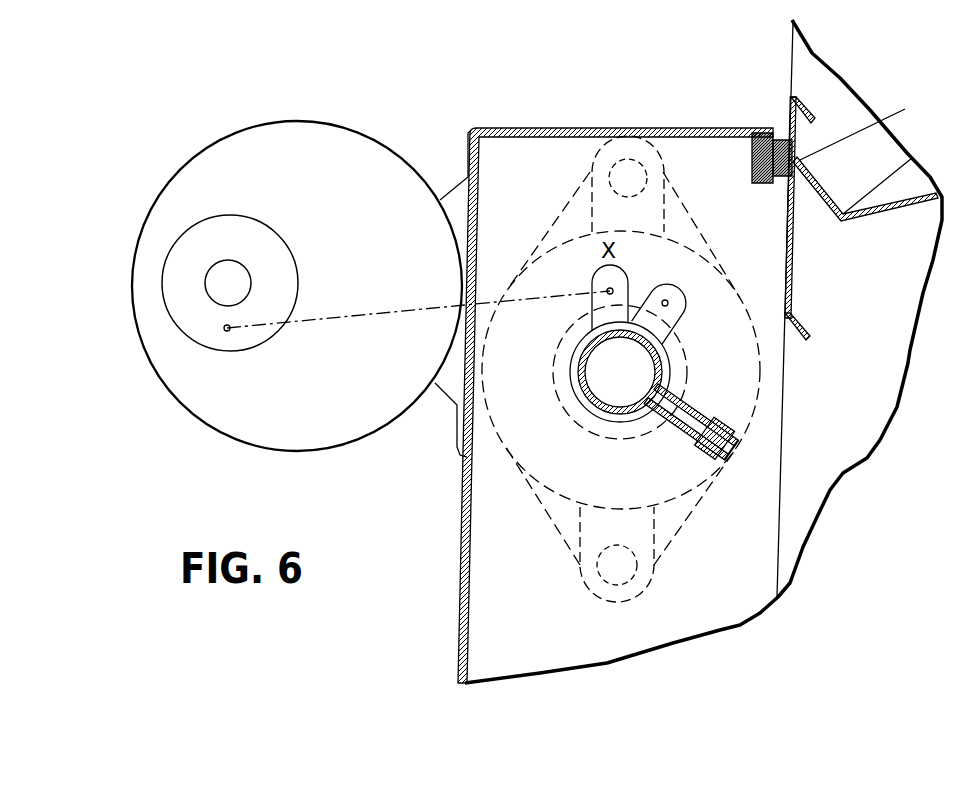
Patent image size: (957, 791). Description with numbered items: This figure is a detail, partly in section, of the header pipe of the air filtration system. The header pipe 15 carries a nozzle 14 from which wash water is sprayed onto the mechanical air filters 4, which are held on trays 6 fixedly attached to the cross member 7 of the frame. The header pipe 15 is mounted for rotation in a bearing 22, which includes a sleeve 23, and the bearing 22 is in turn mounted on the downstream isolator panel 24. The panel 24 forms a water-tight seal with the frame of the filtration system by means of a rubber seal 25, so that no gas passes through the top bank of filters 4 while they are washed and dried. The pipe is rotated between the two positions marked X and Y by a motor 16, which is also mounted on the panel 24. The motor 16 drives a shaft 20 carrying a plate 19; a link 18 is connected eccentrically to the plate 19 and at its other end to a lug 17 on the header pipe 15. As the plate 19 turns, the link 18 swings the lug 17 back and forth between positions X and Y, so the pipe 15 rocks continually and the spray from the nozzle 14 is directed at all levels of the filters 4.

The mechanical air filter 4 is at (868, 142).
The tray 6 is at (903, 200).
The cross member 7 is at (790, 118).
The nozzle 14 is at (723, 460).
The header pipe 15 is at (658, 364).
The motor 16 is at (320, 133).
The lug 17 is at (678, 307).
The link 18 is at (355, 315).
The plate 19 is at (240, 272).
The shaft 20 is at (222, 232).
The bearing 22 is at (652, 260).
The sleeve 23 is at (570, 403).
The downstream isolator panel 24 is at (580, 127).
The rubber seal 25 is at (781, 177).